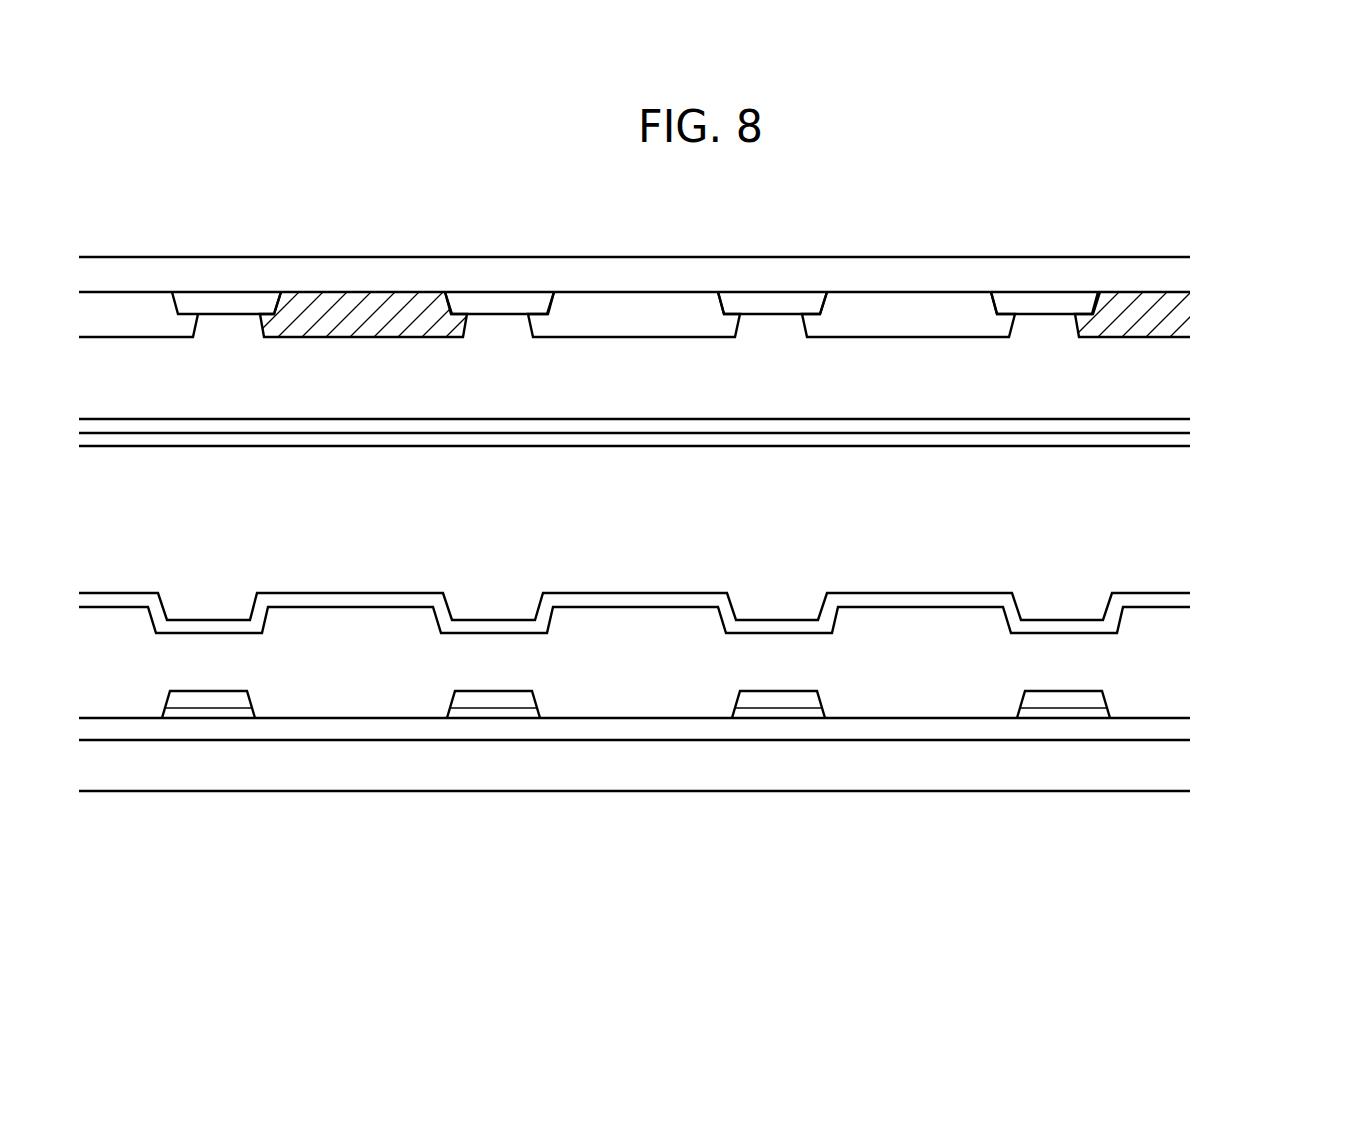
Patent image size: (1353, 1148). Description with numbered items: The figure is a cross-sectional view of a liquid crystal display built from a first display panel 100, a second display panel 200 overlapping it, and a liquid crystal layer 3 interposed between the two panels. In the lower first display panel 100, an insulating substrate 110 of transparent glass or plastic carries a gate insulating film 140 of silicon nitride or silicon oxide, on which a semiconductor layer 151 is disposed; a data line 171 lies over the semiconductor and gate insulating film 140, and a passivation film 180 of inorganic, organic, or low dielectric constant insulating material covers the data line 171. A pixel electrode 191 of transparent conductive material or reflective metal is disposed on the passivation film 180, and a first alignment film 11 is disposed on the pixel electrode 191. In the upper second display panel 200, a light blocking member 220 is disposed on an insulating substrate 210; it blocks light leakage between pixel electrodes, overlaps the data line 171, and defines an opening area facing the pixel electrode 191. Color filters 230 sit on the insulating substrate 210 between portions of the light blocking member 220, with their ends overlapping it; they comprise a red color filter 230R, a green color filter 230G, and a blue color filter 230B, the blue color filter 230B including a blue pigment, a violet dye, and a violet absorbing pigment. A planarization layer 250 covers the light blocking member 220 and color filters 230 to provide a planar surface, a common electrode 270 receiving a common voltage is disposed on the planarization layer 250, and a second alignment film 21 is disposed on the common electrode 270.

The second display panel 200 is at (1272, 257).
The insulating substrate 210 is at (1172, 274).
The light blocking member 220 is at (227, 305).
The color filters 230 is at (748, 524).
The blue color filter 230B is at (313, 307).
The red color filter 230R is at (698, 313).
The green color filter 230G is at (917, 313).
The planarization layer 250 is at (1172, 363).
The common electrode 270 is at (1172, 426).
The second alignment film 21 is at (1172, 440).
The liquid crystal layer 3 is at (1172, 513).
The first display panel 100 is at (1272, 575).
The first alignment film 11 is at (1172, 600).
The pixel electrode 191 is at (1172, 618).
The passivation film 180 is at (1172, 672).
The data line 171 is at (1082, 700).
The semiconductor layer 151 is at (1043, 713).
The gate insulating film 140 is at (1172, 729).
The insulating substrate 110 is at (1172, 769).